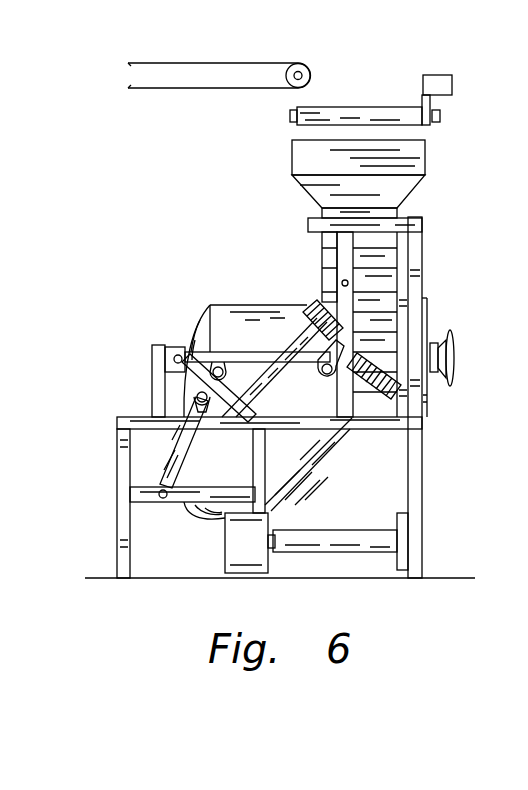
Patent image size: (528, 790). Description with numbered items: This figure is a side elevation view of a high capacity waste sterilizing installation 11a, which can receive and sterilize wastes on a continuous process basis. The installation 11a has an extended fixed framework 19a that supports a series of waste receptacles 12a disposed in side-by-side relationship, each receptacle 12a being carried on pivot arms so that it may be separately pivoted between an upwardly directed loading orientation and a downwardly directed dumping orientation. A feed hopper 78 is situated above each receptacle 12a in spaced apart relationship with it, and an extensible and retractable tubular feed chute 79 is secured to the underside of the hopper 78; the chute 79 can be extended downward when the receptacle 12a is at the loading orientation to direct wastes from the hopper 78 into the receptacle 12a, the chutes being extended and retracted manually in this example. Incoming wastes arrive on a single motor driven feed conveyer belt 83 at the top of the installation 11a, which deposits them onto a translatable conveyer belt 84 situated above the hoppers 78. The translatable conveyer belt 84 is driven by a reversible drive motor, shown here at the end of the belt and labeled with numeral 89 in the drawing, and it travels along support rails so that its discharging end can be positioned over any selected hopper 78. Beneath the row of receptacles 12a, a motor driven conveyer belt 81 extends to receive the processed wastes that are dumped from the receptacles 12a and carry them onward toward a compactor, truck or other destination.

The feed conveyer belt 83 is at (202, 63).
The translatable conveyer belt 84 is at (344, 107).
The feeder drive motor 89 is at (452, 82).
The high capacity installation 11a is at (198, 160).
The feed hopper 78 is at (306, 195).
The tubular feed chute 79 is at (322, 262).
The waste receptacle 12a is at (262, 306).
The fixed framework 19a is at (423, 468).
The conveyer belt 81 is at (311, 530).